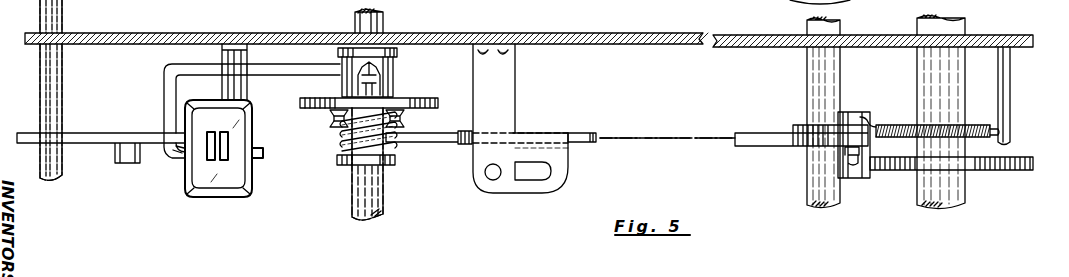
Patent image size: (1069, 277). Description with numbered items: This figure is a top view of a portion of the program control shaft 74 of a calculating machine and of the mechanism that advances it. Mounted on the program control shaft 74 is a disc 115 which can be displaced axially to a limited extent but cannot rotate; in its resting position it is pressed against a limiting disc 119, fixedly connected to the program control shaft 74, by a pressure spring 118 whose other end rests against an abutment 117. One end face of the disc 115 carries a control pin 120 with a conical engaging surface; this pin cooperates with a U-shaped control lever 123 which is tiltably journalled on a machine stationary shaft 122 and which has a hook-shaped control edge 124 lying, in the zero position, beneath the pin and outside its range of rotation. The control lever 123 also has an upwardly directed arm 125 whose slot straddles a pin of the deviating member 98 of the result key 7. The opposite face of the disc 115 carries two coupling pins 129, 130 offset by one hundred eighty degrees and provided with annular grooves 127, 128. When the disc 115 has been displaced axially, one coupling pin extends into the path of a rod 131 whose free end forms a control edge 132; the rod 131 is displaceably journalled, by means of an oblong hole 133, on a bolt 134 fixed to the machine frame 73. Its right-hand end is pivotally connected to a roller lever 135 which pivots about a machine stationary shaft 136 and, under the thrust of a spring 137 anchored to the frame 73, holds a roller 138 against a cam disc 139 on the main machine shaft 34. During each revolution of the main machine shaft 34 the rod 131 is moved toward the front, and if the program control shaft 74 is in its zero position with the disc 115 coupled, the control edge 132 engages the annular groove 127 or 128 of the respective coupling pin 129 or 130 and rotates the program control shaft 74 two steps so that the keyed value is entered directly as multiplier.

The result key 7 is at (245, 176).
The main machine shaft 34 is at (920, 31).
The machine frame 73 is at (607, 35).
The program control shaft 74 is at (360, 181).
The deviating member 98 is at (108, 129).
The disc 115 is at (303, 100).
The abutment 117 is at (390, 165).
The pressure spring 118 is at (382, 142).
The limiting disc 119 is at (385, 51).
The control pin 120 is at (381, 89).
The machine stationary shaft 122 is at (243, 44).
The U-shaped control lever 123 is at (163, 92).
The hook-shaped control edge 124 is at (393, 70).
The upwardly directed arm 125 is at (182, 158).
The annular groove 127 is at (404, 118).
The annular groove 128 is at (335, 117).
The coupling pin 129 is at (420, 99).
The coupling pin 130 is at (329, 114).
The rod 131 is at (573, 138).
The control edge 132 is at (437, 141).
The oblong hole 133 is at (543, 181).
The bolt 134 is at (492, 181).
The roller lever 135 is at (804, 125).
The machine stationary shaft 136 is at (814, 69).
The spring 137 is at (913, 125).
The roller 138 is at (848, 170).
The cam disc 139 is at (991, 170).